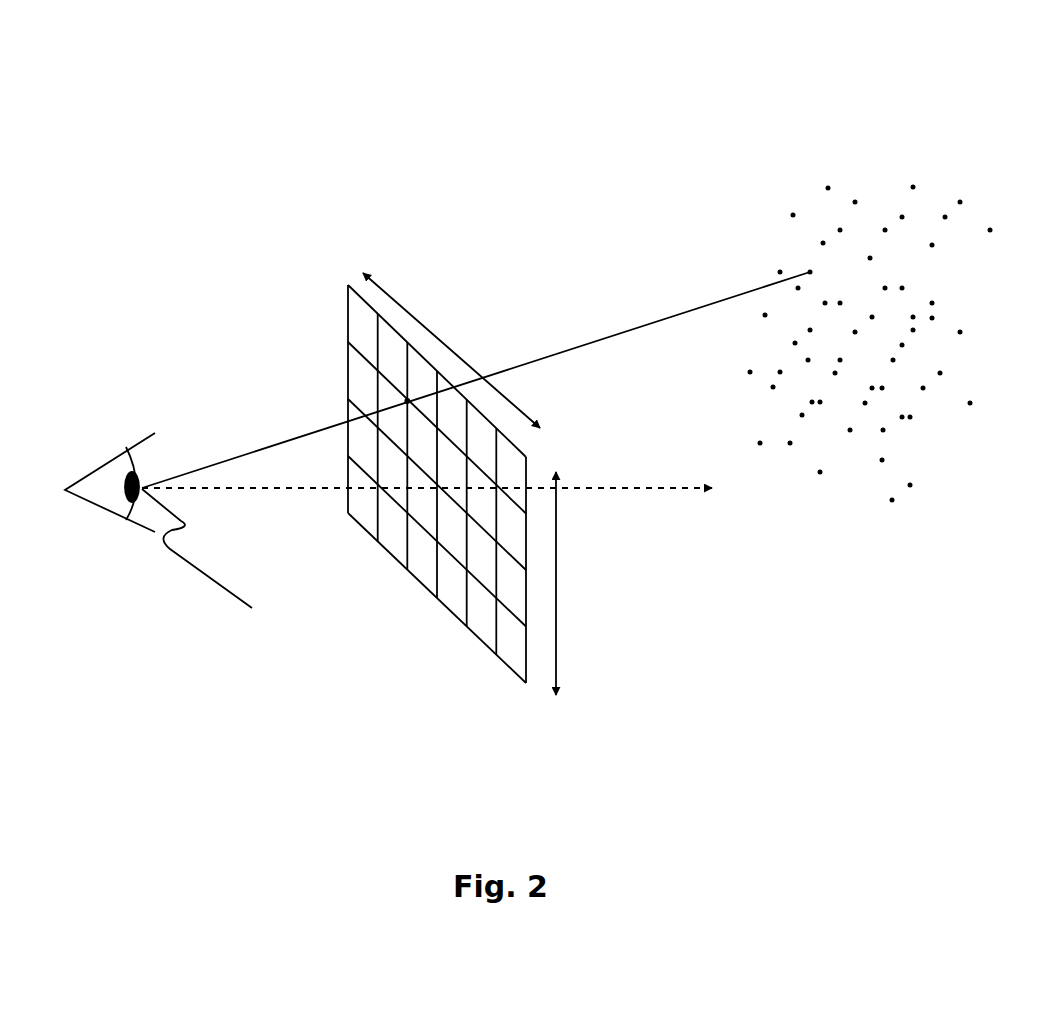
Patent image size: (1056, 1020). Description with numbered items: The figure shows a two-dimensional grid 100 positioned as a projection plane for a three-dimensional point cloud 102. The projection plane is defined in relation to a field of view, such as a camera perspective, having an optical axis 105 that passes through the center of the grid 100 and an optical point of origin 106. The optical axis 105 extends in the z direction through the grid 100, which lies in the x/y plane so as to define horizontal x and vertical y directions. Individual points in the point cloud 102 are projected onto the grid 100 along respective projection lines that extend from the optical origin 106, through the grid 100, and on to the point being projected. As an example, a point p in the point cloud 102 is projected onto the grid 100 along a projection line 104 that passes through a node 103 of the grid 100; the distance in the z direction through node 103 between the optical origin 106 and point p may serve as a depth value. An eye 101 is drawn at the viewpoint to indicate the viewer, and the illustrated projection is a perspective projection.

The 2D grid 100 is at (470, 497).
The eye of viewer 101 is at (110, 503).
The 3D point cloud 102 is at (874, 344).
The node 103 is at (407, 401).
The projection line 104 is at (638, 327).
The optical axis 105 is at (427, 512).
The optical point of origin 106 is at (216, 573).
The point p is at (809, 268).